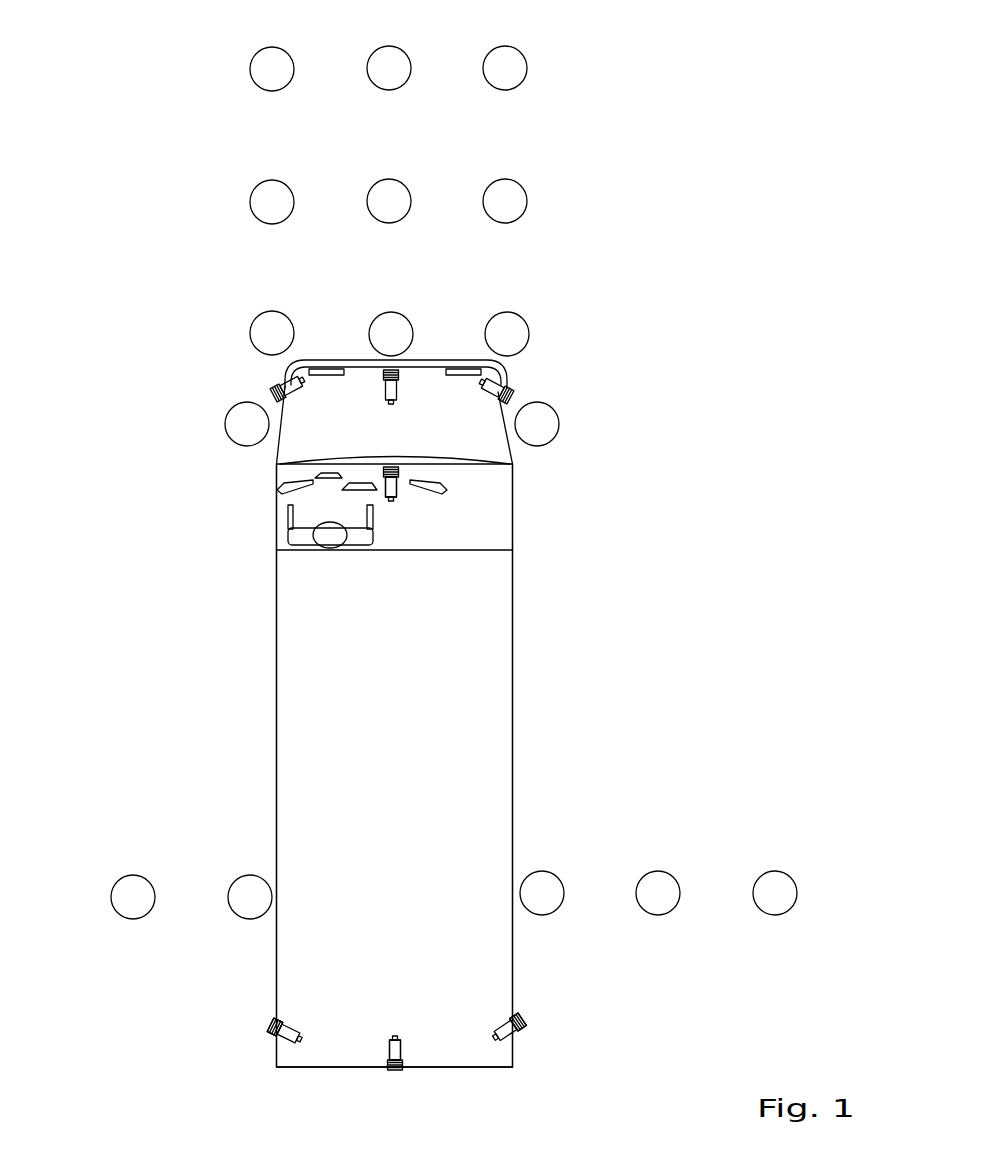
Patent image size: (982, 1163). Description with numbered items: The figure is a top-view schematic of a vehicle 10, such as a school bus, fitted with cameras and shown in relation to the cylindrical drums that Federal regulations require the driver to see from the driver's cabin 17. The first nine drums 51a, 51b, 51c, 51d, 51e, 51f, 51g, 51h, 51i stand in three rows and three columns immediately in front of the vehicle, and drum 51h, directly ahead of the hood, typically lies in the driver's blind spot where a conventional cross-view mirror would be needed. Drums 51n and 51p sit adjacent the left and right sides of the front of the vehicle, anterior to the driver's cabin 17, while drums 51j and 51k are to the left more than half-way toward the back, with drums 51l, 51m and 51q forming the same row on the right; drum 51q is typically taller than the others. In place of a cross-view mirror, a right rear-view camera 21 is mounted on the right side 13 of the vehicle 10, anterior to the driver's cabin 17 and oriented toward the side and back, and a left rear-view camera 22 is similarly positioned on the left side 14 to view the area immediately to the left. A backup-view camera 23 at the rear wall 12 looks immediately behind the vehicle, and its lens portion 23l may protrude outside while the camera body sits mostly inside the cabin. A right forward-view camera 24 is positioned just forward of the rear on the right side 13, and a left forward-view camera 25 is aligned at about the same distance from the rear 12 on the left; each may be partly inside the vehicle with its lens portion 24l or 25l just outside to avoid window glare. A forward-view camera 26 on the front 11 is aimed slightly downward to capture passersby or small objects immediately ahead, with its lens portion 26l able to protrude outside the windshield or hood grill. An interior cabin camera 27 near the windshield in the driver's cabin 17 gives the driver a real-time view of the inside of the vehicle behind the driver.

The vehicle 10 is at (466, 762).
The front of the vehicle 11 is at (395, 374).
The rear wall of the vehicle 12 is at (365, 1094).
The right side of the vehicle 13 is at (559, 765).
The left side of the vehicle 14 is at (222, 765).
The driver's cabin 17 is at (268, 530).
The right rear-view camera 21 is at (552, 373).
The left rear-view camera 22 is at (211, 368).
The backup-view camera 23 is at (442, 1082).
The lens portion 23l is at (365, 1085).
The right forward-view camera 24 is at (553, 1049).
The lens portion 24l is at (562, 1009).
The left forward-view camera 25 is at (238, 1053).
The lens portion 25l is at (210, 1005).
The forward-view camera 26 is at (443, 343).
The lens portion 26l is at (422, 451).
The interior cabin camera 27 is at (509, 522).
The cylindrical drum 51a is at (197, 55).
The cylindrical drum 51b is at (431, 51).
The cylindrical drum 51c is at (559, 52).
The cylindrical drum 51d is at (197, 155).
The cylindrical drum 51e is at (434, 162).
The cylindrical drum 51f is at (557, 172).
The cylindrical drum 51g is at (197, 285).
The cylindrical drum 51h is at (436, 295).
The cylindrical drum 51i is at (559, 305).
The cylindrical drum 51j is at (100, 869).
The cylindrical drum 51k is at (213, 870).
The cylindrical drum 51l is at (570, 920).
The cylindrical drum 51m is at (696, 920).
The cylindrical drum 51n is at (180, 442).
The cylindrical drum 51p is at (595, 440).
The cylindrical drum 51q is at (802, 920).